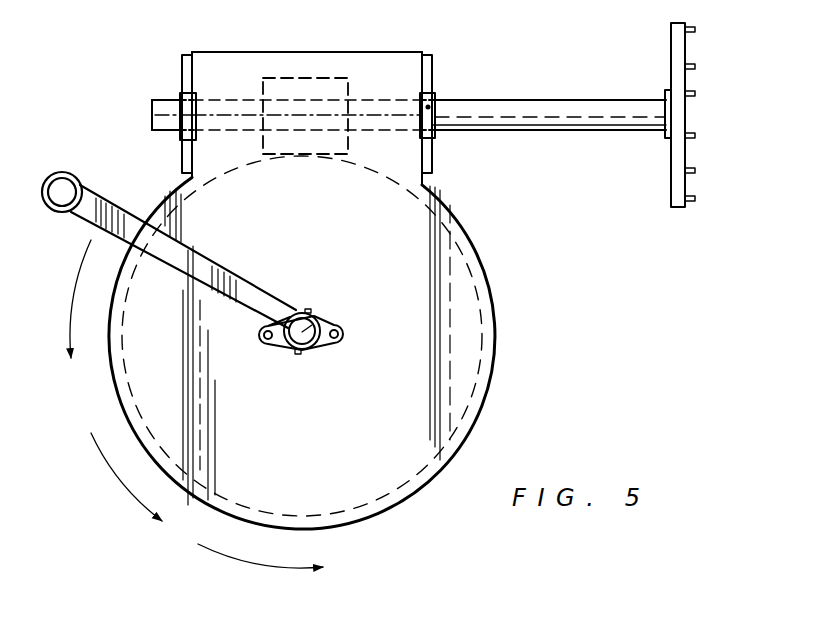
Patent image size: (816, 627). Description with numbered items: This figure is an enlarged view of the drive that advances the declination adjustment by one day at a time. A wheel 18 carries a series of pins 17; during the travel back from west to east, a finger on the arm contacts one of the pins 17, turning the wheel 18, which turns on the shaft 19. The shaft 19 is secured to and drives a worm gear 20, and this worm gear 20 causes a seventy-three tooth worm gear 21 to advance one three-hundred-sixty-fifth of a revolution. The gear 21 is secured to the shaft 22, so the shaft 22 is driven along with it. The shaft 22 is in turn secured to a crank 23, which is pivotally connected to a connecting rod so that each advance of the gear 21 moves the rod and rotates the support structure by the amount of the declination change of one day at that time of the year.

The pins 17 is at (696, 30).
The wheel 18 is at (670, 45).
The shaft 19 is at (551, 113).
The worm gear 20 is at (340, 79).
The seventy-three tooth worm gear 21 is at (477, 291).
The shaft 22 is at (317, 322).
The crank 23 is at (267, 310).